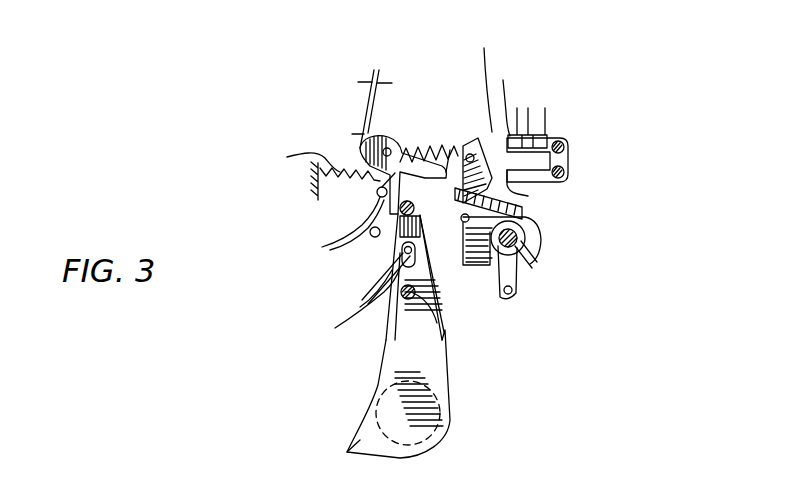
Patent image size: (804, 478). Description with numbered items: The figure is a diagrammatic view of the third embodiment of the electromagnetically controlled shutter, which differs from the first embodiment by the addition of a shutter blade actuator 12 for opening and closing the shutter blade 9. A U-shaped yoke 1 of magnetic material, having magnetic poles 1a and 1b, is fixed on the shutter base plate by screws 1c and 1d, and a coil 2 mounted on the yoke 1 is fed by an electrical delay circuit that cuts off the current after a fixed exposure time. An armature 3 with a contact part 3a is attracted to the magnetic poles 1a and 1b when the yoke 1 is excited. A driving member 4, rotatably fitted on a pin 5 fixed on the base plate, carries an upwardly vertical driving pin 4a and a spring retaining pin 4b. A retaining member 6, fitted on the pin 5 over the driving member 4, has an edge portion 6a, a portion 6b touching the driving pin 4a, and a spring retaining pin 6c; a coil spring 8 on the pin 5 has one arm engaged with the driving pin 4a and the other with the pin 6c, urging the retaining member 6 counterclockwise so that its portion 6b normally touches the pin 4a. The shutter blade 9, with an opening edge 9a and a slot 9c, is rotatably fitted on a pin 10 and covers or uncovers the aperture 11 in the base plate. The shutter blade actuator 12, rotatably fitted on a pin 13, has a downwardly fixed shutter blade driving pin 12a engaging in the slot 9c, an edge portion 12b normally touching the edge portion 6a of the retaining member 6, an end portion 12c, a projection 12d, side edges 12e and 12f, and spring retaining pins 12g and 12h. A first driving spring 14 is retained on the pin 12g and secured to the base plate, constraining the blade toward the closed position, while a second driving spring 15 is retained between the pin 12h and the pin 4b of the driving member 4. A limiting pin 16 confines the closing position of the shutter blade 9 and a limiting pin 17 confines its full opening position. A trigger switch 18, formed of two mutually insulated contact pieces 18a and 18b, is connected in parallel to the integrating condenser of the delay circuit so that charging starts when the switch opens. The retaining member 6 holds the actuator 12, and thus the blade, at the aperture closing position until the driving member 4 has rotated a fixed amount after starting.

The U-shaped yoke 1 is at (570, 158).
The magnetic pole 1a is at (528, 196).
The magnetic pole 1b is at (508, 94).
The screw 1c is at (566, 145).
The screw 1d is at (566, 172).
The coil 2 is at (528, 108).
The armature 3 is at (484, 170).
The contact part 3a is at (483, 74).
The driving member 4 is at (541, 237).
The driving pin 4a is at (463, 265).
The spring retaining pin 4b is at (470, 153).
The pin 5 is at (520, 254).
The retaining member 6 is at (517, 280).
The edge portion 6a is at (462, 220).
The portion touching the driving pin 6b is at (470, 220).
The spring retaining pin 6c is at (504, 296).
The coil spring 8 is at (522, 245).
The shutter blade 9 is at (440, 365).
The opening edge 9a is at (366, 417).
The slot 9c is at (386, 297).
The pin 10 is at (444, 332).
The aperture 11 is at (440, 437).
The shutter blade actuator 12 is at (440, 298).
The shutter blade driving pin 12a is at (346, 307).
The edge portion 12b is at (447, 197).
The end portion 12c is at (450, 150).
The projection 12d is at (360, 147).
The side edge 12e is at (322, 247).
The side edge 12f is at (375, 281).
The spring retaining pin 12g is at (377, 189).
The spring retaining pin 12h is at (388, 147).
The pin 13 is at (388, 272).
The first driving spring 14 is at (320, 172).
The second driving spring 15 is at (426, 146).
The limiting pin 16 is at (355, 233).
The limiting pin 17 is at (371, 236).
The trigger switch 18 is at (374, 70).
The contact piece 18a is at (405, 82).
The contact piece 18b is at (350, 79).